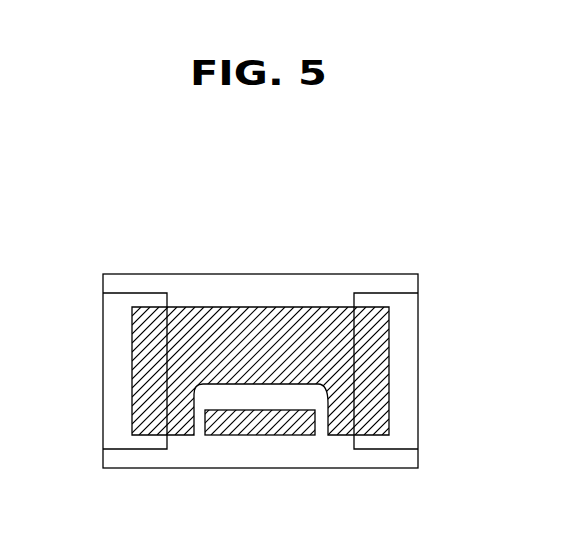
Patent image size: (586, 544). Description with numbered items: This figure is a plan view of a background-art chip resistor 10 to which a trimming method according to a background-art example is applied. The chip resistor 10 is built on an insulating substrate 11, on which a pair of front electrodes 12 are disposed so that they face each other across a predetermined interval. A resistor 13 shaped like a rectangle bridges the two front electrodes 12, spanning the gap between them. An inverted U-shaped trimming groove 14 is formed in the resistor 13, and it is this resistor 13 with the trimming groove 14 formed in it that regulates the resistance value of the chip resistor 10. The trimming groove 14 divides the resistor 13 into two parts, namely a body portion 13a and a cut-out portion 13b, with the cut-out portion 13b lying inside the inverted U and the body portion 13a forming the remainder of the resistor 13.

The chip resistor 10 is at (482, 230).
The insulating substrate 11 is at (151, 274).
The front electrodes 12 is at (108, 365).
The resistor 13 is at (320, 307).
The body portion 13a is at (243, 318).
The cut-out portion 13b is at (291, 427).
The trimming groove 14 is at (233, 398).